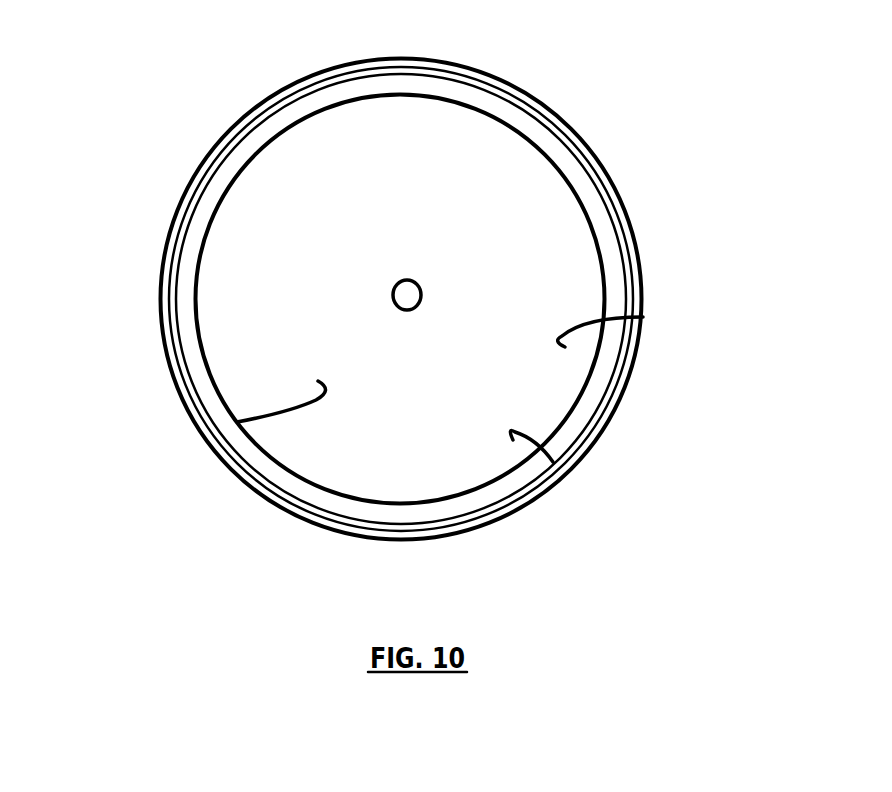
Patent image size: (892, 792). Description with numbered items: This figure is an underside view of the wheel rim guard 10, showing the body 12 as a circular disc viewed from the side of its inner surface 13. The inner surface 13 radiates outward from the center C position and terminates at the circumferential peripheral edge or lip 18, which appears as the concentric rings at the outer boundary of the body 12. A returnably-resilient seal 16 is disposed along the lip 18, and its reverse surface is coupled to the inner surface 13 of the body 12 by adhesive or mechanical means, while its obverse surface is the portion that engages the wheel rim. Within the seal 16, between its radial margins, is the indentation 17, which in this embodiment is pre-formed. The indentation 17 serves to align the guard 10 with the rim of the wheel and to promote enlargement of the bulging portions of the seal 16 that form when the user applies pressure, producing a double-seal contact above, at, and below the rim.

The wheel rim guard 10 is at (700, 128).
The body 12 is at (350, 208).
The inner surface 13 is at (529, 310).
The center C is at (413, 281).
The seal 16 is at (318, 381).
The indentation 17 is at (513, 440).
The circumferential peripheral edge or lip 18 is at (565, 347).